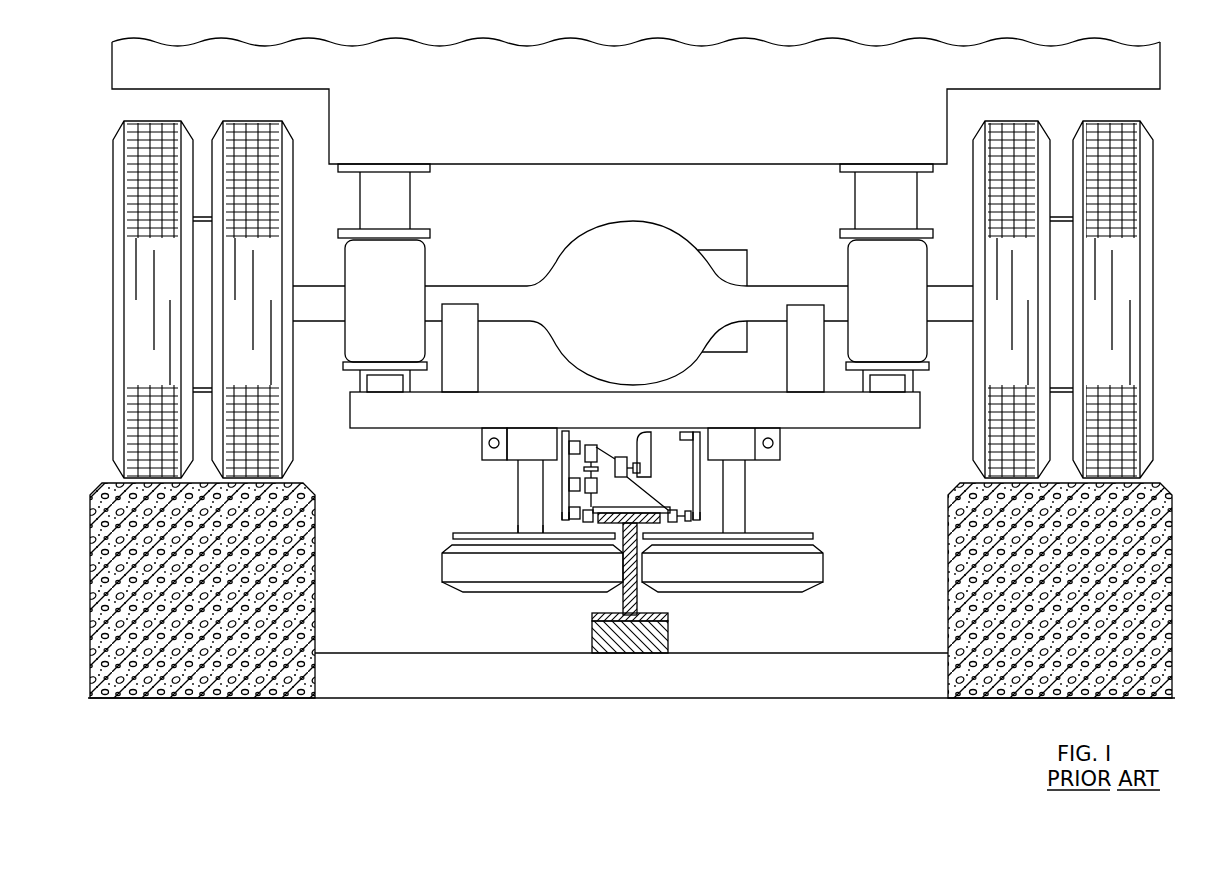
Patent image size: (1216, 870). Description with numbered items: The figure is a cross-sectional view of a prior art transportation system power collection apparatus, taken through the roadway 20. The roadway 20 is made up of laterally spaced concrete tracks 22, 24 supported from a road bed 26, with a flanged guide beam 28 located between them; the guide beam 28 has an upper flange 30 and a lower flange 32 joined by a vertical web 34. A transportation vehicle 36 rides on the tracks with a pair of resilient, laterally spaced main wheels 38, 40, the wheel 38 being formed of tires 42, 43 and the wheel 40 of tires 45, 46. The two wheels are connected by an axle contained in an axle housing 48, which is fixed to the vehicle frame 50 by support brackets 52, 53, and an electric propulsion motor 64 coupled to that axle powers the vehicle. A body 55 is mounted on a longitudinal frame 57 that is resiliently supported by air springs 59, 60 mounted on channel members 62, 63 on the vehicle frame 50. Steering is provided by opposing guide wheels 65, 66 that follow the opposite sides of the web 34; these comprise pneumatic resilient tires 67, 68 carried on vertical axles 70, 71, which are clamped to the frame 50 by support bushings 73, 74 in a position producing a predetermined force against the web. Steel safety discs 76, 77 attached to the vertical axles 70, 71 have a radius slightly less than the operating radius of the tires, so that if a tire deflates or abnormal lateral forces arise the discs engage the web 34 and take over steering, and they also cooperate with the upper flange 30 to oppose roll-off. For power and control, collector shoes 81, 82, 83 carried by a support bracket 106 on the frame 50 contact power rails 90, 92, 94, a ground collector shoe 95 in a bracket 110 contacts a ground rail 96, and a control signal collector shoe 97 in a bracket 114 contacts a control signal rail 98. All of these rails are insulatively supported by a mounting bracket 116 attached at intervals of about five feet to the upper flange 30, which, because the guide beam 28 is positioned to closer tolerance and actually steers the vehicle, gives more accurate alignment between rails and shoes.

The roadway 20 is at (500, 731).
The concrete track 22 is at (90, 572).
The concrete track 24 is at (1172, 568).
The road bed 26 is at (825, 690).
The flanged guide beam 28 is at (668, 607).
The upper flange 30 is at (640, 550).
The lower flange 32 is at (592, 617).
The vertical web 34 is at (623, 550).
The transportation vehicle 36 is at (713, 34).
The vehicle main wheel 38 is at (80, 232).
The vehicle main wheel 40 is at (1166, 274).
The tire 42 is at (113, 145).
The tire 43 is at (271, 125).
The tire 45 is at (1032, 125).
The tire 46 is at (1146, 150).
The axle housing 48 is at (600, 243).
The vehicle frame 50 is at (905, 422).
The support bracket 52 is at (470, 350).
The support bracket 53 is at (787, 370).
The body 55 is at (843, 50).
The longitudinal frame 57 is at (413, 190).
The air spring 59 is at (348, 272).
The air spring 60 is at (925, 268).
The channel member 62 is at (362, 378).
The channel member 63 is at (916, 376).
The electric propulsion motor 64 is at (722, 250).
The guide wheel 65 is at (403, 590).
The guide wheel 66 is at (831, 590).
The pneumatic resilient tire 67 is at (480, 592).
The pneumatic resilient tire 68 is at (790, 592).
The vertical axle 70 is at (523, 460).
The vertical axle 71 is at (746, 476).
The support bushing 73 is at (481, 440).
The support bushing 74 is at (748, 432).
The steel safety disc 76 is at (455, 535).
The steel safety disc 77 is at (815, 537).
The power collector shoe 81 is at (578, 441).
The power collector shoe 82 is at (568, 485).
The power collector shoe 83 is at (645, 468).
The power rail 90 is at (591, 447).
The power rail 92 is at (568, 470).
The power rail 94 is at (643, 432).
The ground collector shoe 95 is at (582, 530).
The ground rail 96 is at (566, 503).
The control signal collector shoe 97 is at (700, 530).
The control signal rail 98 is at (690, 515).
The support bracket 106 is at (563, 448).
The bracket 110 is at (538, 530).
The bracket 114 is at (697, 433).
The mounting bracket 116 is at (645, 501).